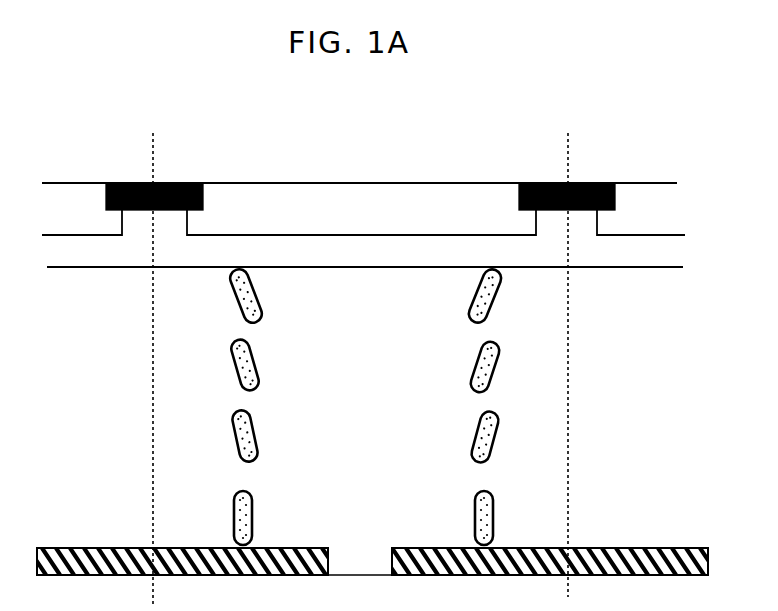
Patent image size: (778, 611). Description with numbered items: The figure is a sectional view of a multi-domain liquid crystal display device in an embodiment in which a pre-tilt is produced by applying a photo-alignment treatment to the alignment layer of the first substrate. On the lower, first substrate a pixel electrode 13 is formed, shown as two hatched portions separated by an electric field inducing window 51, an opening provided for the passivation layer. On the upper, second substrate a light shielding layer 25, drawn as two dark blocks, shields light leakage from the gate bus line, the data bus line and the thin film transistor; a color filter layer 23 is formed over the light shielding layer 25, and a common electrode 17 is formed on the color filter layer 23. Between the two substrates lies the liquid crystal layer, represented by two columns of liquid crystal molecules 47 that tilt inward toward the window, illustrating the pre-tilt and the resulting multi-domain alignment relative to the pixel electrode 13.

The pixel electrode 13 is at (610, 552).
The common electrode 17 is at (592, 258).
The color filter layer 23 is at (304, 194).
The light shielding layer 25 is at (173, 183).
The liquid crystal molecules 47 is at (498, 281).
The electric field inducing window 51 is at (362, 556).